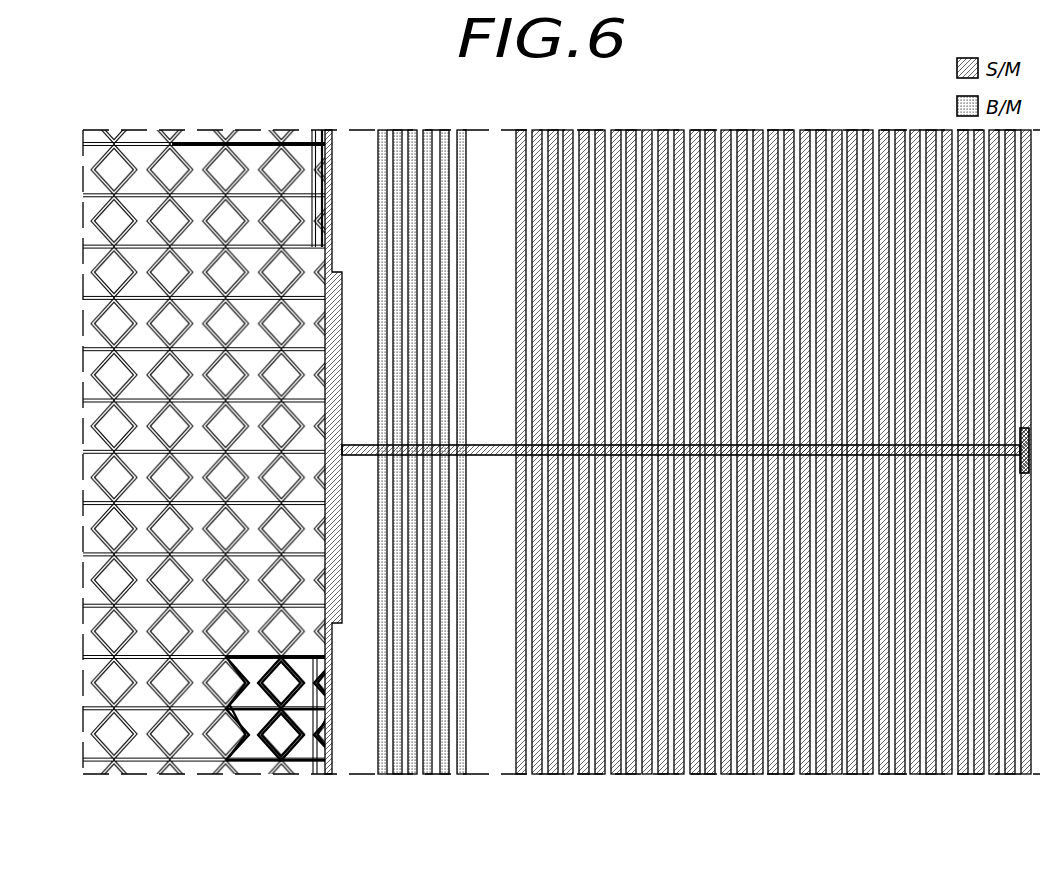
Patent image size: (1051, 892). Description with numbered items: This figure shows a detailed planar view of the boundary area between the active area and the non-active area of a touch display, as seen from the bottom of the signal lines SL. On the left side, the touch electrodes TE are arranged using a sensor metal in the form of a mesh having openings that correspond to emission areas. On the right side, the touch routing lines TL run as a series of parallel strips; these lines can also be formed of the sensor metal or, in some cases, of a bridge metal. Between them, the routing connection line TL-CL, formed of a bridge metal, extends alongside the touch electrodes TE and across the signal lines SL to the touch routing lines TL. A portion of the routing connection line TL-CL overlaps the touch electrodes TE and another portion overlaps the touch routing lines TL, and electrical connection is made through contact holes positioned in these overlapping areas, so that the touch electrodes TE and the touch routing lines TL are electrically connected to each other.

The touch electrode TE is at (100, 413).
The routing connection line TL-CL is at (362, 452).
The signal line SL is at (428, 760).
The touch routing line TL is at (516, 750).